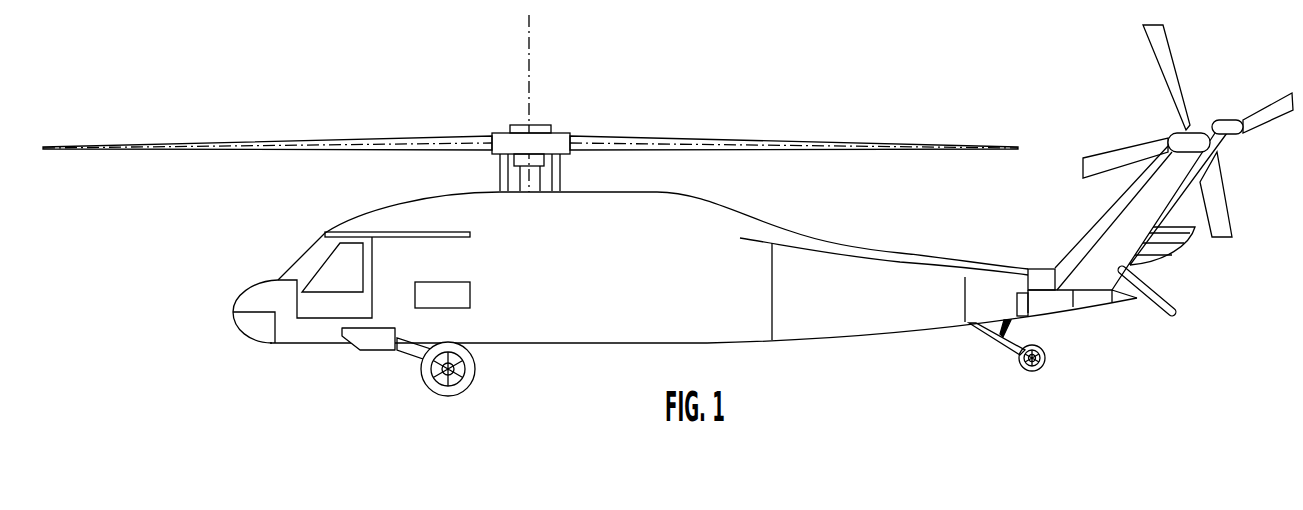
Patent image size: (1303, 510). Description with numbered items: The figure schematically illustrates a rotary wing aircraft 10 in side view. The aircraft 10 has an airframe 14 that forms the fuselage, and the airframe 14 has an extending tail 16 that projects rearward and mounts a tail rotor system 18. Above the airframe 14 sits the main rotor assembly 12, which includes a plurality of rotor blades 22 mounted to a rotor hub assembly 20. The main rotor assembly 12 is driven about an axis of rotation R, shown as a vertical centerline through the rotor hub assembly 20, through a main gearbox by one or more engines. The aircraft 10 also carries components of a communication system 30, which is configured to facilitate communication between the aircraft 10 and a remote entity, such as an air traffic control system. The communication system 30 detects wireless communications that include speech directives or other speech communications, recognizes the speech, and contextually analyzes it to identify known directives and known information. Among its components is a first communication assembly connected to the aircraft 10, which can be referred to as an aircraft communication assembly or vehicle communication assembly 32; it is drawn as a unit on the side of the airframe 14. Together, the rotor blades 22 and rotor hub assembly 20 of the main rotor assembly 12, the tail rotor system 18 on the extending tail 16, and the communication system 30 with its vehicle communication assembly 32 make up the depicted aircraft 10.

The rotary wing aircraft 10 is at (188, 62).
The main rotor assembly 12 is at (618, 79).
The airframe 14 is at (611, 320).
The extending tail 16 is at (918, 315).
The tail rotor system 18 is at (1098, 89).
The rotor hub assembly 20 is at (498, 133).
The rotor blades 22 is at (333, 140).
The communication system 30 is at (380, 386).
The vehicle communication assembly 32 is at (471, 296).
The axis of rotation R is at (540, 33).